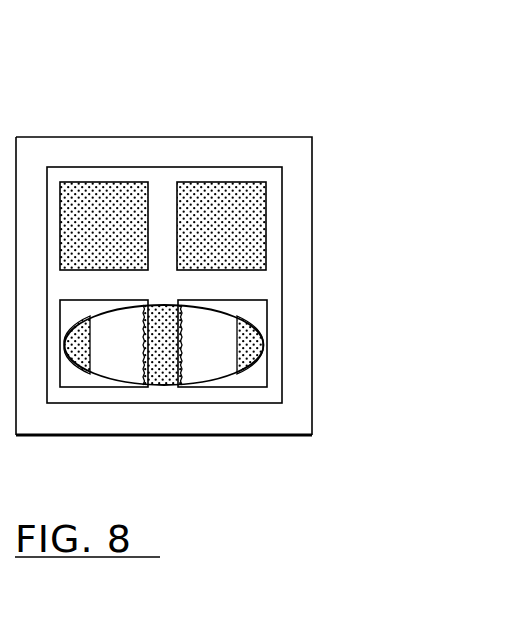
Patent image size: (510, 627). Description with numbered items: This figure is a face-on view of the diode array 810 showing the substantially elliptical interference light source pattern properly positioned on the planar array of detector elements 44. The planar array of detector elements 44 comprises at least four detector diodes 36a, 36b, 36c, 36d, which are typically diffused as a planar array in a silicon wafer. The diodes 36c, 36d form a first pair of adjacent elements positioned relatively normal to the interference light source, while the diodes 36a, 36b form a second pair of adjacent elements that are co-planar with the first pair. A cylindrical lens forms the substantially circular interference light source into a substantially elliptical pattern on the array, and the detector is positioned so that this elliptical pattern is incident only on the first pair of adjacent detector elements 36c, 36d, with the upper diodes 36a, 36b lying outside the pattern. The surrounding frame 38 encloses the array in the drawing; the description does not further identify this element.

The diode array 810 is at (257, 120).
The substrate 38 is at (170, 431).
The planar array of detector elements 44 is at (97, 295).
The detector diode 36a is at (130, 188).
The detector diode 36b is at (250, 187).
The detector diode 36c is at (103, 383).
The detector diode 36d is at (260, 383).